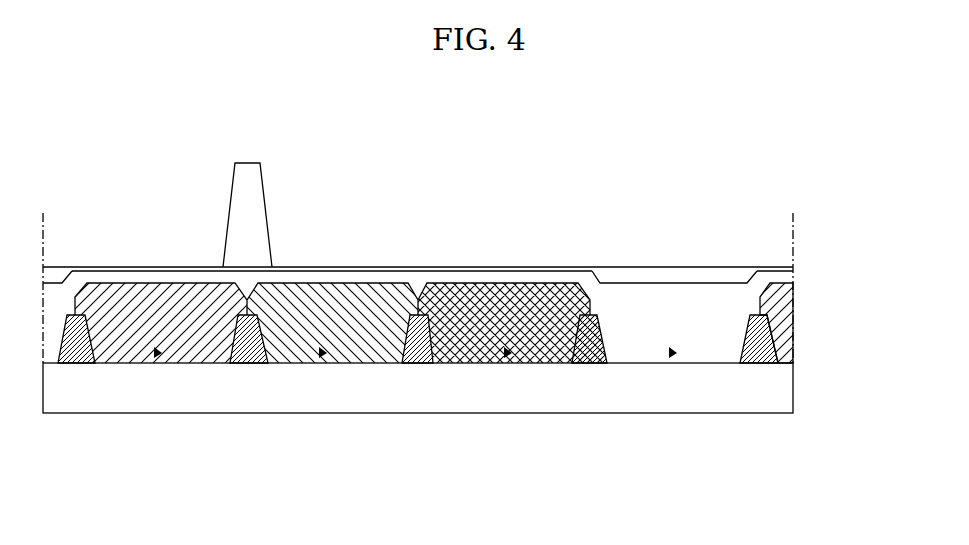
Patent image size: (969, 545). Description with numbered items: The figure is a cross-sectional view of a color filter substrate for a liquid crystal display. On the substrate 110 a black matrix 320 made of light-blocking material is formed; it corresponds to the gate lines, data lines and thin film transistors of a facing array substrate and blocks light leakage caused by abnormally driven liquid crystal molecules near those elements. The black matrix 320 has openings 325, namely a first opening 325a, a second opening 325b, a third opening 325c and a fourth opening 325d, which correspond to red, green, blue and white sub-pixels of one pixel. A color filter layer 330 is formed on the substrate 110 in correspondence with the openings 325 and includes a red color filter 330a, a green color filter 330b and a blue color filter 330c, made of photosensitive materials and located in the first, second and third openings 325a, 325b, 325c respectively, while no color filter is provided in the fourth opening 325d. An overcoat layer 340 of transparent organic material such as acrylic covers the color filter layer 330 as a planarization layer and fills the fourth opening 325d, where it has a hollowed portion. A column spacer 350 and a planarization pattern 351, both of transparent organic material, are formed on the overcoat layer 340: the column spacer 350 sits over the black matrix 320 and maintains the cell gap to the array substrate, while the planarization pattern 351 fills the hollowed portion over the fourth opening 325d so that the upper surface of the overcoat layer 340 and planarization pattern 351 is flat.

The substrate 110 is at (385, 401).
The black matrix 320 is at (467, 232).
The openings 325 is at (418, 410).
The first opening 325a is at (158, 360).
The second opening 325b is at (323, 360).
The third opening 325c is at (508, 360).
The fourth opening 325d is at (673, 360).
The color filter layer 330 is at (341, 232).
The red color filter 330a is at (163, 297).
The green color filter 330b is at (331, 295).
The blue color filter 330c is at (505, 295).
The overcoat layer 340 is at (662, 297).
The column spacer 350 is at (230, 204).
The planarization pattern 351 is at (61, 277).